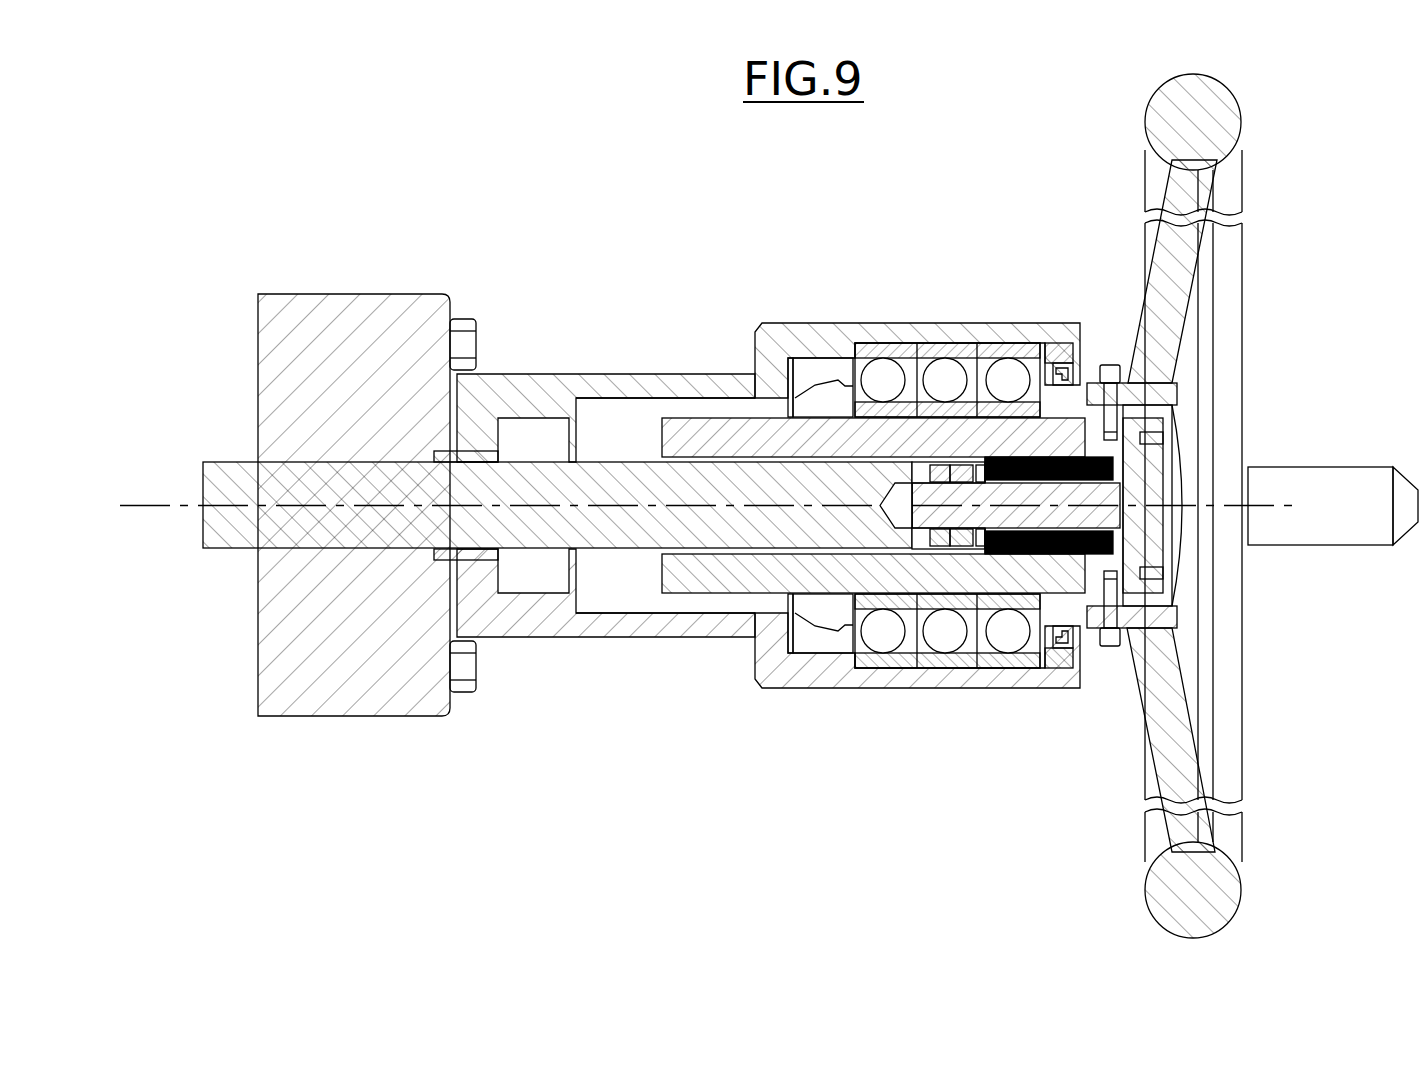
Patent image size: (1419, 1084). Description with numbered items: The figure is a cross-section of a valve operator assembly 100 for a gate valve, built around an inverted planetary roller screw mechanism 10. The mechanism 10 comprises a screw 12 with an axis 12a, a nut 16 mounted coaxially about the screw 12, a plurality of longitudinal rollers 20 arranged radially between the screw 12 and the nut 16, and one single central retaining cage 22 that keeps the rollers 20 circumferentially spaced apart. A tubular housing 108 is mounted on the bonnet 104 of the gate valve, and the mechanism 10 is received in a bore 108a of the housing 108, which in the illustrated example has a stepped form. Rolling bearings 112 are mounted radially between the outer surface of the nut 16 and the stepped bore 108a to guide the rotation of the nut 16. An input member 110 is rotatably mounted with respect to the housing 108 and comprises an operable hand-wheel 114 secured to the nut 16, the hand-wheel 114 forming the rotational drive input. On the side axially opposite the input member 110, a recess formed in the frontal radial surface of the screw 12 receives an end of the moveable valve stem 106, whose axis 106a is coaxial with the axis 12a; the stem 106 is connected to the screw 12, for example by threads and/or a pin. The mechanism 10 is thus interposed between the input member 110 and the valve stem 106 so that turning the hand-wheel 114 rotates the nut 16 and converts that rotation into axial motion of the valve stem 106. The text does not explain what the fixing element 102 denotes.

The planetary roller screw mechanism 10 is at (762, 603).
The screw 12 is at (1078, 496).
The axis of the screw 12a is at (133, 503).
The nut 16 is at (842, 575).
The longitudinal rollers 20 is at (1078, 560).
The central retaining cage 22 is at (983, 543).
The valve operator assembly 100 is at (986, 510).
The fixing member 102 is at (449, 290).
The bonnet 104 is at (258, 332).
The valve stem 106 is at (223, 548).
The axis of the valve stem 106a is at (133, 503).
The tubular housing 108 is at (573, 374).
The bore of the housing 108a is at (638, 405).
The input member 110 is at (1273, 116).
The rolling bearings 112 is at (1007, 370).
The hand-wheel 114 is at (1242, 293).